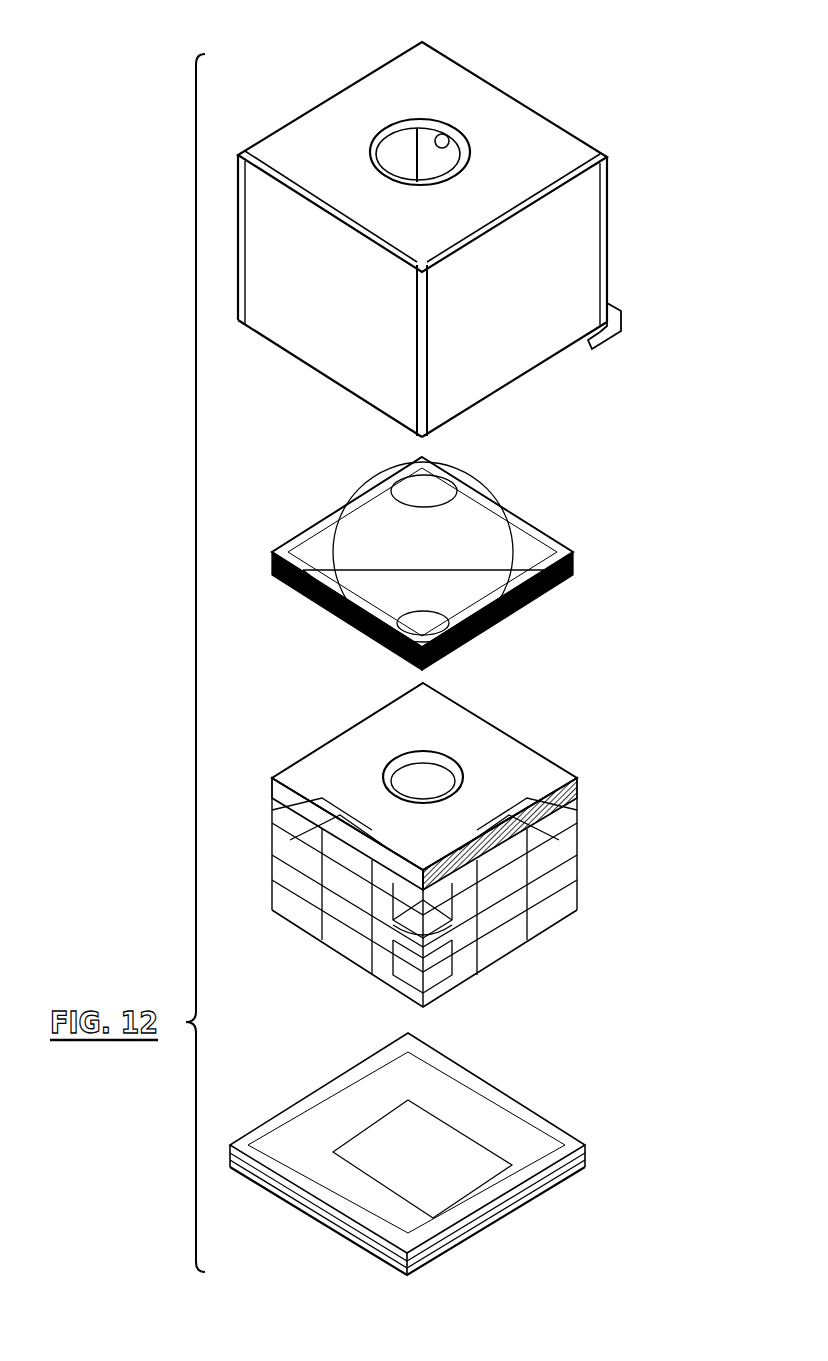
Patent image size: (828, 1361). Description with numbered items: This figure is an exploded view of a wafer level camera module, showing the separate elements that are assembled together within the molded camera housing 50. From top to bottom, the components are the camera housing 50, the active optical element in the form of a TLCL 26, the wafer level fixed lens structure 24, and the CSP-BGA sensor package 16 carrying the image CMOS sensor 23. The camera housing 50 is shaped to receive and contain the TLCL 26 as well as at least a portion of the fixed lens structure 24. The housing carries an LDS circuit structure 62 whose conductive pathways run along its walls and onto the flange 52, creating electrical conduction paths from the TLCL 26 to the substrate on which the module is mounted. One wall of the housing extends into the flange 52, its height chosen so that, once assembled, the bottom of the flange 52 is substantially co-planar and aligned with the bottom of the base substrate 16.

The CSP-BGA sensor package 16 is at (293, 1142).
The image CMOS sensor 23 is at (432, 1162).
The wafer level fixed lens structure 24 is at (600, 915).
The TLCL 26 is at (541, 553).
The camera housing 50 is at (340, 366).
The flange 52 is at (614, 327).
The LDS circuit structure 62 is at (446, 136).